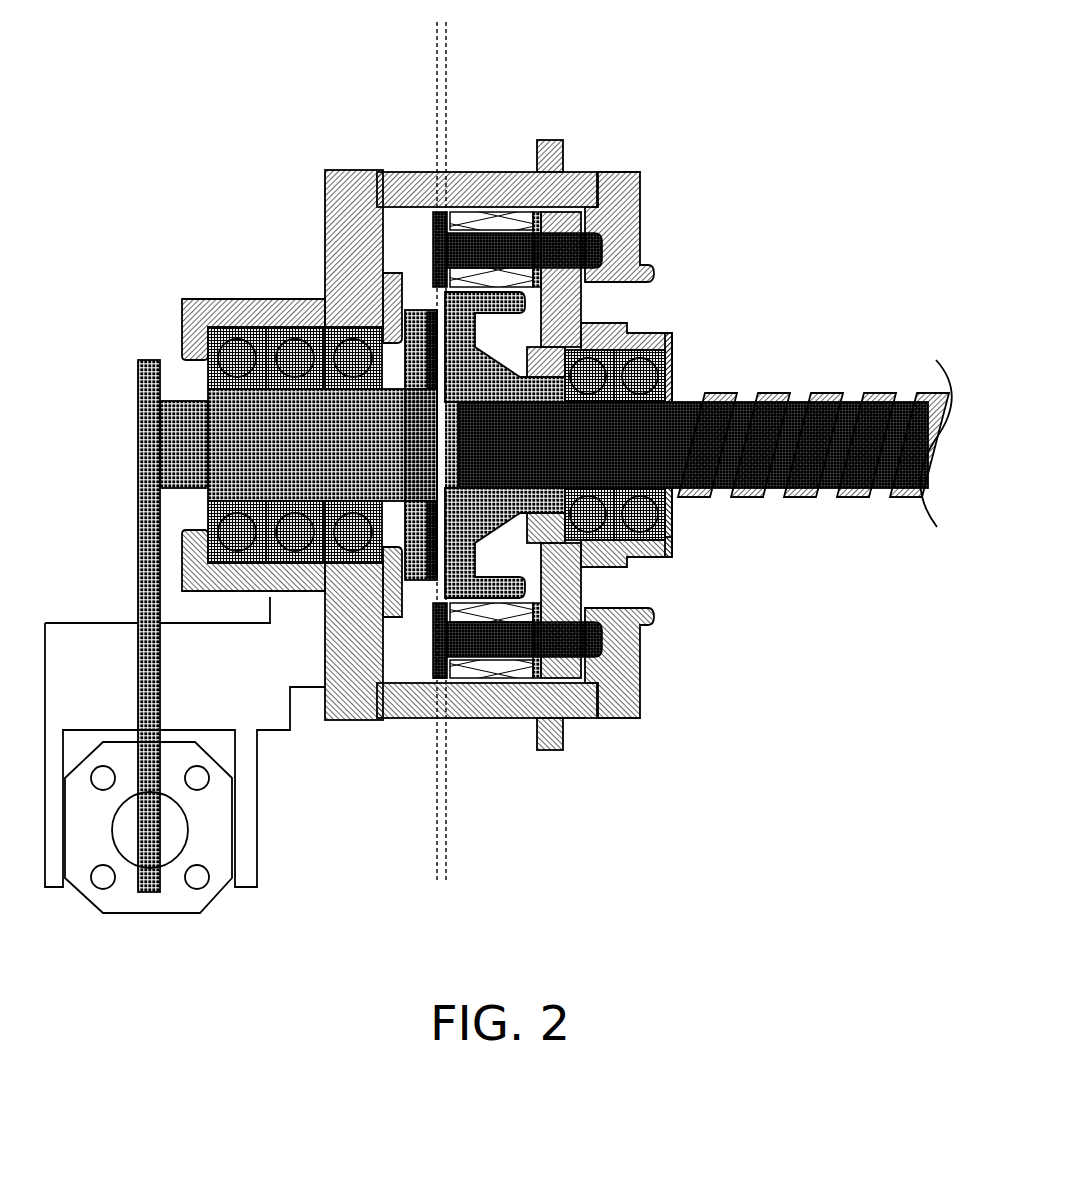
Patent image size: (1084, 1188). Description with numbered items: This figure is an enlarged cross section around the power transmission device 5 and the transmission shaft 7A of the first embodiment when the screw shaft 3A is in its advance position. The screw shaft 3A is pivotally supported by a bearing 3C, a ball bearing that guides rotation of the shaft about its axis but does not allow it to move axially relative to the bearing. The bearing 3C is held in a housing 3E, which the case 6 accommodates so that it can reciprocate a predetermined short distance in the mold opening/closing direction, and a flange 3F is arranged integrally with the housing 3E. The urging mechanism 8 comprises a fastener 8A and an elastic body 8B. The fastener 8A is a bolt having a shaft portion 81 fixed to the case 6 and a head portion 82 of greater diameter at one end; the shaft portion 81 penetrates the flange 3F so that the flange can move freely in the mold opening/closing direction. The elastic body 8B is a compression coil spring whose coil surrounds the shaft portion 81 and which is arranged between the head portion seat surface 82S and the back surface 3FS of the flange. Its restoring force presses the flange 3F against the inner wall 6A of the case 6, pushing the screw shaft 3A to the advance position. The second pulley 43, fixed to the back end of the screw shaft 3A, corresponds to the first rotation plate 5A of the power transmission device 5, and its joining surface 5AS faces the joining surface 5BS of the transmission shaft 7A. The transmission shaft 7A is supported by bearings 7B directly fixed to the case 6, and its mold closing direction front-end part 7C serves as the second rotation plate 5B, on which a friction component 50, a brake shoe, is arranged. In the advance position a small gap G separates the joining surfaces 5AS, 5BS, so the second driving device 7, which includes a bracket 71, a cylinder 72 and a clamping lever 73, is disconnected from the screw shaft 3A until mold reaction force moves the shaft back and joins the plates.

The gap G is at (508, 847).
The power transmission device 5 is at (414, 409).
The case 6 is at (457, 429).
The inner wall 6A is at (565, 173).
The urging mechanism 8 is at (504, 404).
The fastener 8A is at (466, 421).
The shaft portion 81 is at (470, 248).
The head portion 82 is at (440, 250).
The head portion seat surface 82S is at (443, 703).
The elastic body 8B is at (485, 220).
The flange 3F is at (577, 303).
The back surface of the flange 3FS is at (577, 717).
The bearing 3C is at (652, 323).
The housing 3E is at (667, 332).
The screw shaft 3A is at (778, 395).
The first rotation plate 5A is at (601, 515).
The second pulley 43 is at (485, 527).
The joining surface 5AS is at (672, 537).
The second rotation plate 5B is at (311, 383).
The mold closing direction front-end part 7C is at (322, 445).
The friction component 50 is at (400, 322).
The joining surface 5BS is at (567, 500).
The second driving device 7 is at (209, 595).
The transmission shaft 7A is at (212, 427).
The bearing 7B is at (262, 325).
The bracket 71 is at (300, 717).
The cylinder 72 is at (205, 895).
The clamping lever 73 is at (147, 550).